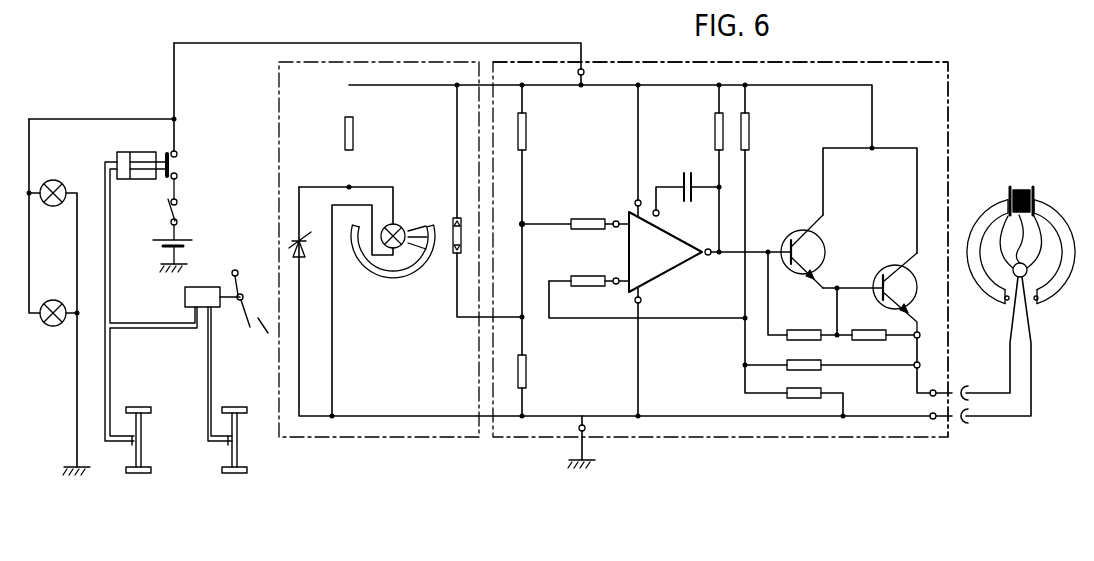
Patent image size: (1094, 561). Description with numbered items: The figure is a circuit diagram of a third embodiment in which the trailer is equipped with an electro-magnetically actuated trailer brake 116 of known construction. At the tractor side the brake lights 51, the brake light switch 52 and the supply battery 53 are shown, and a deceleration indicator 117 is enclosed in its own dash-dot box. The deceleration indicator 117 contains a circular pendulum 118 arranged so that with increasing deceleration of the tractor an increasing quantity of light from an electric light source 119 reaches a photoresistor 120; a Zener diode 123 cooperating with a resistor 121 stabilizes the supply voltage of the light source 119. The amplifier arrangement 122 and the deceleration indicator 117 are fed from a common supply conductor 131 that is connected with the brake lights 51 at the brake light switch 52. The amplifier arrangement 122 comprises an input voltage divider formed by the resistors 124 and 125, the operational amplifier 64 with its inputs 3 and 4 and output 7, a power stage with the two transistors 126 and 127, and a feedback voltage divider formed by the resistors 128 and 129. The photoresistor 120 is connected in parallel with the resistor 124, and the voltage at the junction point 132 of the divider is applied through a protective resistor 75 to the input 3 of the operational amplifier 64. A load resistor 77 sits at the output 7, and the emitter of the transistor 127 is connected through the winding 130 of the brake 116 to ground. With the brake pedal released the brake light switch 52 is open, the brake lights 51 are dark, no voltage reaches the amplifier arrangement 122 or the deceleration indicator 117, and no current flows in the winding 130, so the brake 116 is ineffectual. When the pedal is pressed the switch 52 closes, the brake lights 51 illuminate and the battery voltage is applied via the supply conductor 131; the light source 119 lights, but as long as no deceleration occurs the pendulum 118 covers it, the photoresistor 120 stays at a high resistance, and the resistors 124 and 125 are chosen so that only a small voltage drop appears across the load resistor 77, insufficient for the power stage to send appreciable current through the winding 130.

The brake lights 51 is at (52, 207).
The brake light switch 52 is at (182, 162).
The supply battery 53 is at (152, 240).
The deceleration indicator 117 is at (367, 61).
The circular pendulum 118 is at (358, 259).
The electric light source 119 is at (400, 224).
The photoresistor 120 is at (448, 250).
The resistor 121 is at (354, 130).
The Zener diode 123 is at (292, 252).
The supply conductor 131 is at (615, 83).
The amplifier arrangement 122 is at (803, 61).
The resistor 124 is at (527, 130).
The resistor 125 is at (527, 371).
The junction point 132 is at (524, 222).
The protective resistor 75 is at (589, 219).
The input 3 is at (616, 220).
The input 4 is at (616, 277).
The operational amplifier 64 is at (662, 267).
The output 7 is at (712, 255).
The load resistor 77 is at (714, 133).
The transistor 126 is at (823, 250).
The transistor 127 is at (889, 268).
The resistor 128 is at (814, 361).
The resistor 129 is at (814, 389).
The electro-magnetically actuated trailer brake 116 is at (1019, 187).
The winding 130 is at (1015, 278).